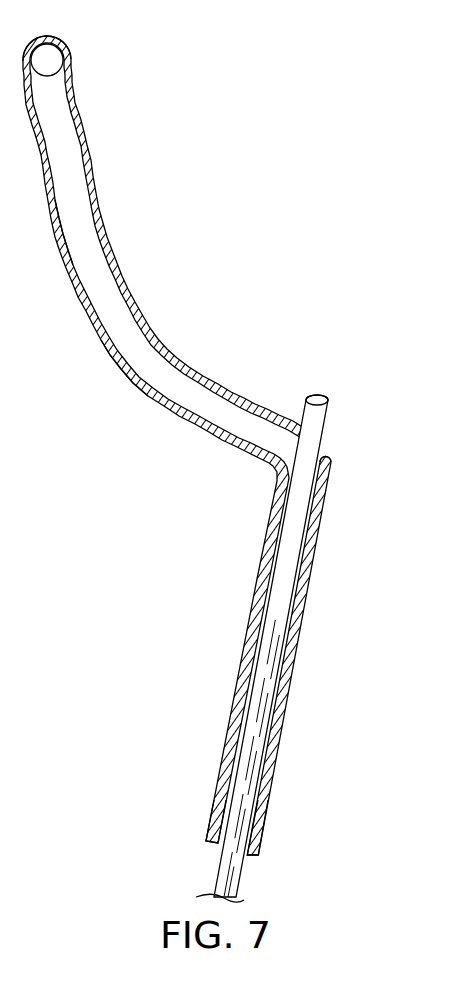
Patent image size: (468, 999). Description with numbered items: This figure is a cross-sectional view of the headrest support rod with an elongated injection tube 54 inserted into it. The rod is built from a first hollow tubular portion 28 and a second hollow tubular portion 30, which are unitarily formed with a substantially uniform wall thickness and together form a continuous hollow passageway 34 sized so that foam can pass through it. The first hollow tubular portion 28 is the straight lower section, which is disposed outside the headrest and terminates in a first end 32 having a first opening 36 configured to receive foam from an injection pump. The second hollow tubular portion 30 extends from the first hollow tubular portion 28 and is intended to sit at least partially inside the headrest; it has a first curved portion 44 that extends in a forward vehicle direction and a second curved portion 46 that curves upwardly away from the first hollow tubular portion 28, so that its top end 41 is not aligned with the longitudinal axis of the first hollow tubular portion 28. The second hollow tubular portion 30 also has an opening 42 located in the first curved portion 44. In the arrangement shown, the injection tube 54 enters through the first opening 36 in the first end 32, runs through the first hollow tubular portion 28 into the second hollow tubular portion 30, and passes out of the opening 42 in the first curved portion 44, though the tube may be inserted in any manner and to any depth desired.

The first hollow tubular portion 28 is at (233, 713).
The second hollow tubular portion 30 is at (88, 138).
The first end 32 is at (259, 846).
The hollow passageway 34 is at (85, 247).
The first opening 36 is at (212, 848).
The top end 41 is at (57, 38).
The opening 42 is at (44, 38).
The first curved portion 44 is at (326, 489).
The second curved portion 46 is at (125, 370).
The injection tube 54 is at (326, 415).